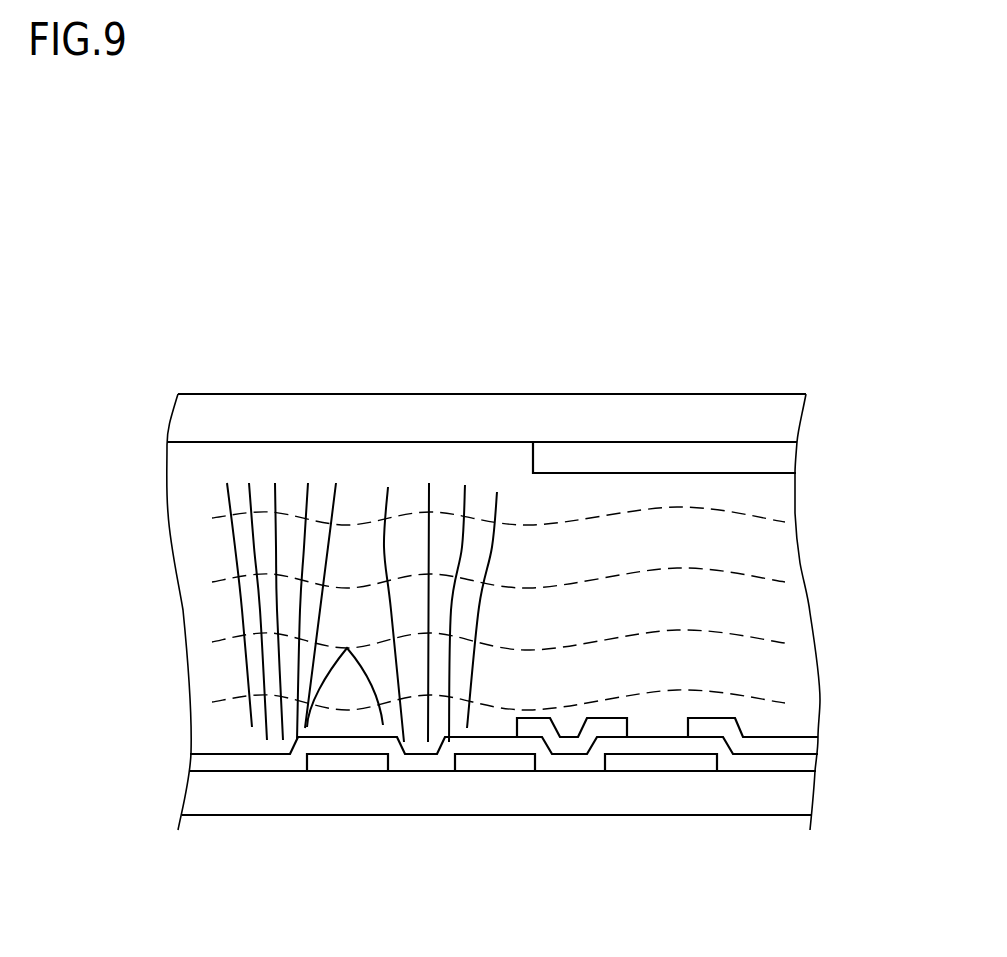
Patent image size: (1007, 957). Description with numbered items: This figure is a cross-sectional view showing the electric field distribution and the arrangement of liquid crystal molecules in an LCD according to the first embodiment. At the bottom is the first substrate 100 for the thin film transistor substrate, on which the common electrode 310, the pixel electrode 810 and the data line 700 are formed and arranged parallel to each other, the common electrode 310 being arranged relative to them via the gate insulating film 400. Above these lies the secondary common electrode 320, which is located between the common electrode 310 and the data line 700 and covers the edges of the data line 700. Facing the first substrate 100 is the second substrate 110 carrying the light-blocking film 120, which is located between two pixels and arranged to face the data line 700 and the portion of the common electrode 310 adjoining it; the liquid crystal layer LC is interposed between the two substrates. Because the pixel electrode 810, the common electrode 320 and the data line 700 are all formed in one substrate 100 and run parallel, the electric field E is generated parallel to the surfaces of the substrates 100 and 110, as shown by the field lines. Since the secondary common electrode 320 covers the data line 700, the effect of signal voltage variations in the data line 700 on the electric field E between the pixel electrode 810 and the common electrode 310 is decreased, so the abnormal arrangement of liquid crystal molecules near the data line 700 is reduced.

The first substrate 100 is at (768, 807).
The second substrate 110 is at (790, 422).
The light-blocking film 120 is at (790, 458).
The common electrode 310 is at (493, 763).
The secondary common electrode 320 is at (805, 745).
The gate insulating film 400 is at (798, 760).
The data line 700 is at (663, 763).
The pixel electrode 810 is at (345, 763).
The electric field E is at (747, 635).
The liquid crystal layer LC is at (184, 608).